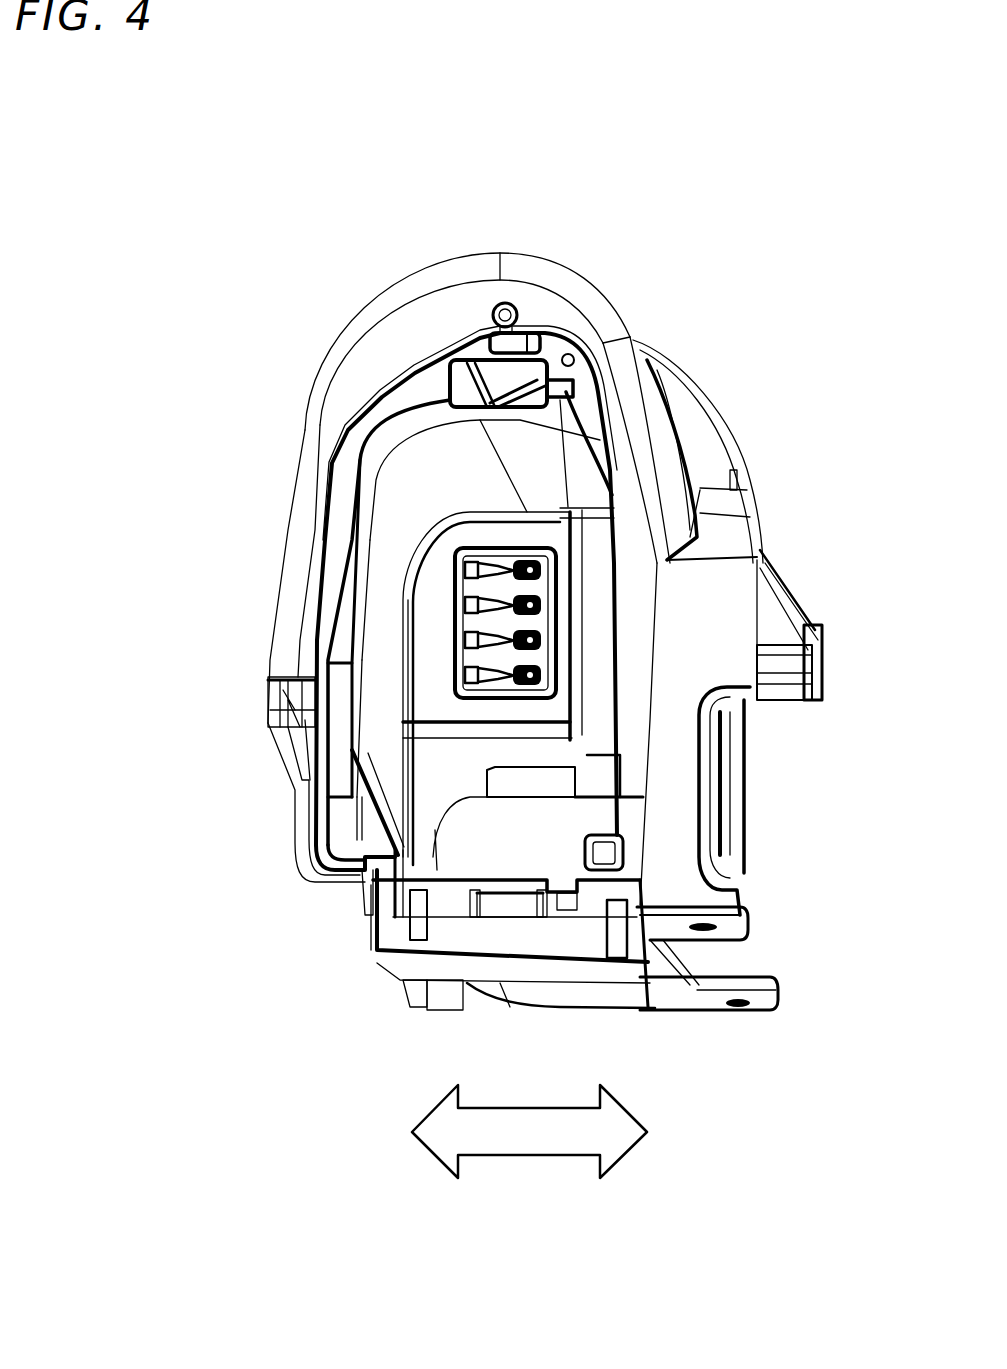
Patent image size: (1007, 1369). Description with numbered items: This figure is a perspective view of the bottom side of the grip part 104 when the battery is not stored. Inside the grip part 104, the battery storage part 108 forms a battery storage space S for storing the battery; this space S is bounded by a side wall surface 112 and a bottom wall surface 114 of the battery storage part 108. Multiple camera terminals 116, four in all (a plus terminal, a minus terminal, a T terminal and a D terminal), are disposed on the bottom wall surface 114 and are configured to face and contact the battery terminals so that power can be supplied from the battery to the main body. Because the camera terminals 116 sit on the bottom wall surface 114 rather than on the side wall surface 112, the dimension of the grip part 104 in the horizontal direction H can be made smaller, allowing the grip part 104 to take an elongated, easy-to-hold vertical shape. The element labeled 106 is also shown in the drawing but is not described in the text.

The grip part 104 is at (745, 288).
The hood 106 is at (465, 273).
The battery storage part 108 is at (372, 375).
The side wall surface 112 is at (415, 527).
The bottom wall surface 114 is at (447, 774).
The camera terminals 116 is at (440, 635).
The battery storage space S is at (419, 475).
The horizontal direction H is at (537, 1135).